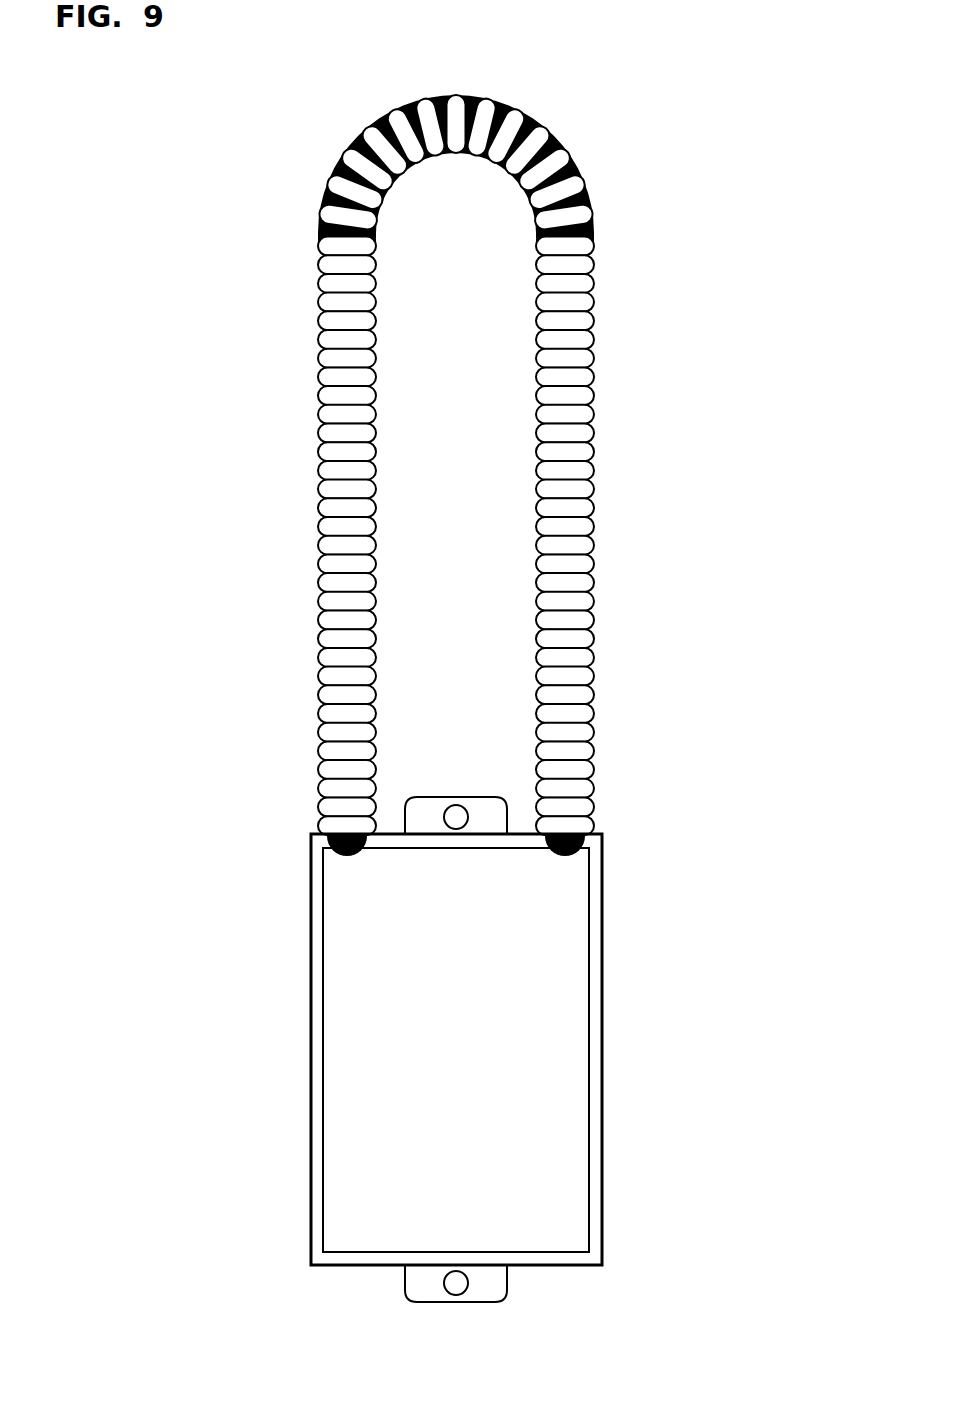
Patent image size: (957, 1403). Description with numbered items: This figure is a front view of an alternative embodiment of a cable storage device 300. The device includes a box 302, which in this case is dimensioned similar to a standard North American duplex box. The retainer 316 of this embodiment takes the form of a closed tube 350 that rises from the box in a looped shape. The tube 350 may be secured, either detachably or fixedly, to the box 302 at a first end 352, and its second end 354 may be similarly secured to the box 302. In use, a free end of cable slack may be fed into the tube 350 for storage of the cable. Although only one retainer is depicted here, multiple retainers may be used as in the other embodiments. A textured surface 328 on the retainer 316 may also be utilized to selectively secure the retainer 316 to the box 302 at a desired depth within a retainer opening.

The cable storage device 300 is at (705, 504).
The box 302 is at (635, 960).
The retainer 316 is at (638, 319).
The textured surface 328 is at (610, 565).
The closed tube 350 is at (526, 134).
The first end 352 is at (304, 829).
The second end 354 is at (553, 870).